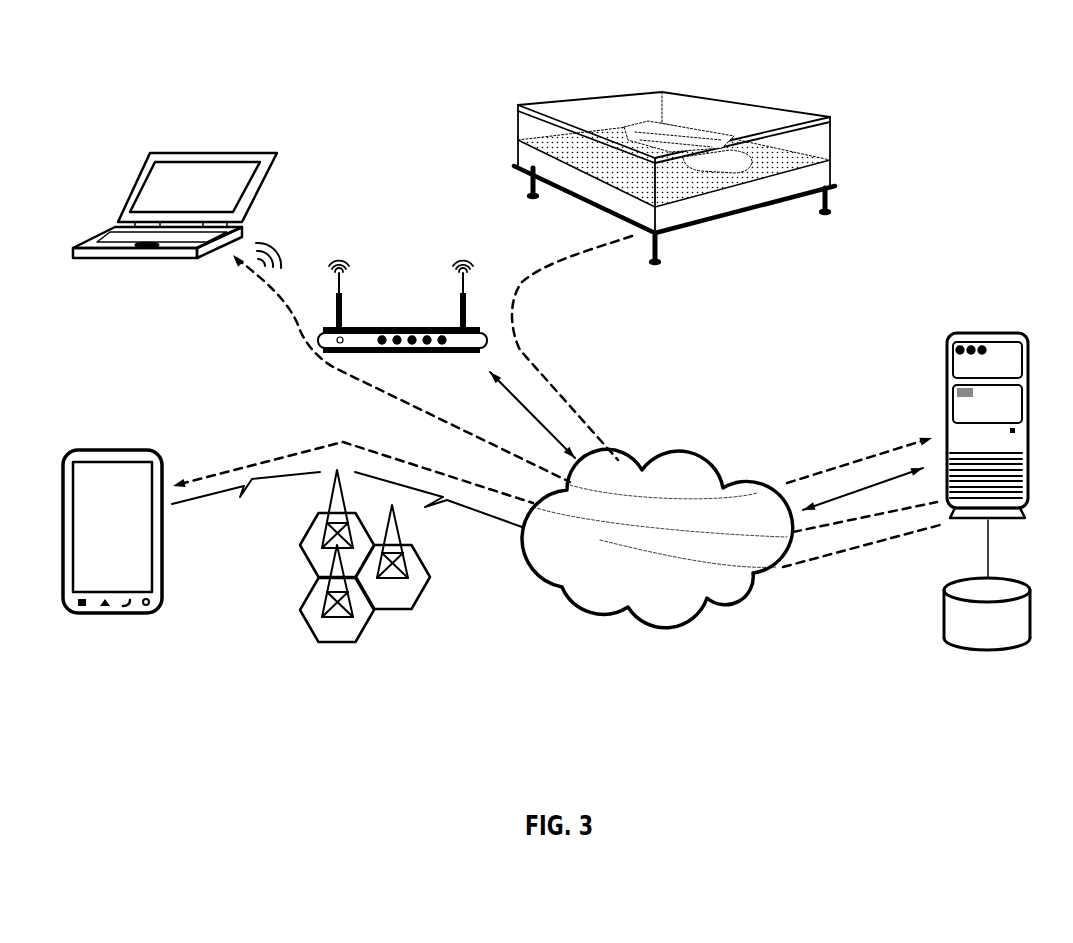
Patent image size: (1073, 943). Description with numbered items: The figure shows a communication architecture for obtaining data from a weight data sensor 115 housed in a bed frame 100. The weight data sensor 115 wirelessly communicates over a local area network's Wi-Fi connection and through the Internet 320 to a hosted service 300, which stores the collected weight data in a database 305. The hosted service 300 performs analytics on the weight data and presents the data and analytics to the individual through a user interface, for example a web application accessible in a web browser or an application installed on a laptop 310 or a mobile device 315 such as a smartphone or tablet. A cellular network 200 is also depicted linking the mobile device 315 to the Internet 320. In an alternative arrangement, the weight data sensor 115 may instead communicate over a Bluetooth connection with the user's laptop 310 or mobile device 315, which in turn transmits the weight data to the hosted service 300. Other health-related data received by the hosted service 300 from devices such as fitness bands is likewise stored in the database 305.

The bed frame 100 is at (763, 212).
The weight data sensor 115 is at (647, 133).
The cellular network 200 is at (365, 573).
The hosted service 300 is at (987, 437).
The database 305 is at (987, 614).
The laptop 310 is at (112, 531).
The mobile device 315 is at (177, 210).
The Internet 320 is at (657, 538).